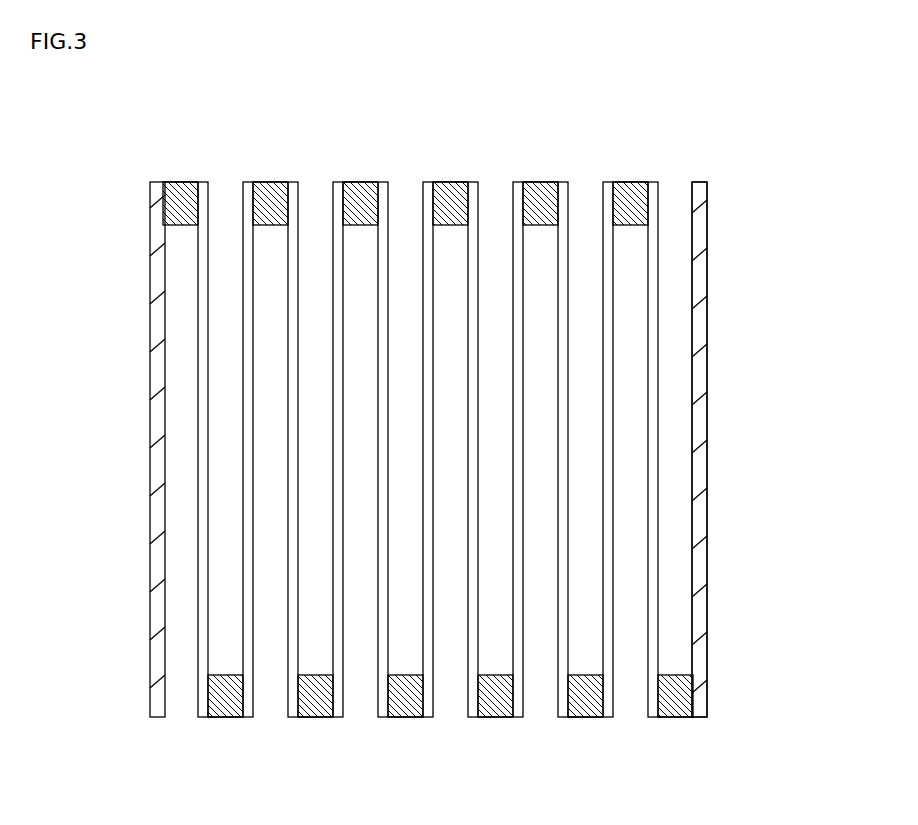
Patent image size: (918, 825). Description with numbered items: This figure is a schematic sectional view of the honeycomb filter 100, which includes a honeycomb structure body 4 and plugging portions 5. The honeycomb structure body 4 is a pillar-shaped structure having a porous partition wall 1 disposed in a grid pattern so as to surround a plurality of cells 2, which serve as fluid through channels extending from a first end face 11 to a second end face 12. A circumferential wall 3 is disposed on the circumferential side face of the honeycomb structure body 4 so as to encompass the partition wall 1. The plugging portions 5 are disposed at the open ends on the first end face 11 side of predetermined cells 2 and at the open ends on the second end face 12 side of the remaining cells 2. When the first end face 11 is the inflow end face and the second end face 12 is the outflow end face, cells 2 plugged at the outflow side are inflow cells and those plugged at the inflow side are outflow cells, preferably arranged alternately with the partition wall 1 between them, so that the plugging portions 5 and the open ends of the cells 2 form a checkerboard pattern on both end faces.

The honeycomb filter 100 is at (793, 51).
The partition wall 1 is at (571, 195).
The cells 2 is at (490, 245).
The circumferential wall 3 is at (152, 342).
The honeycomb structure body 4 is at (713, 192).
The plugging portions 5 is at (183, 203).
The first end face 11 is at (173, 163).
The second end face 12 is at (188, 730).